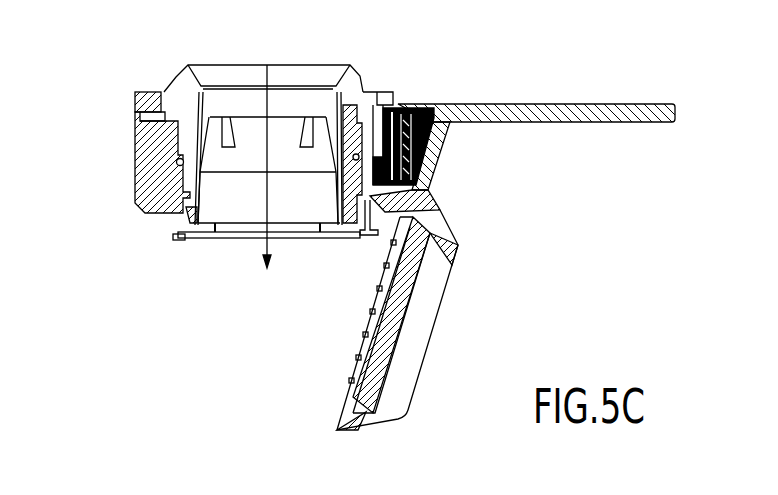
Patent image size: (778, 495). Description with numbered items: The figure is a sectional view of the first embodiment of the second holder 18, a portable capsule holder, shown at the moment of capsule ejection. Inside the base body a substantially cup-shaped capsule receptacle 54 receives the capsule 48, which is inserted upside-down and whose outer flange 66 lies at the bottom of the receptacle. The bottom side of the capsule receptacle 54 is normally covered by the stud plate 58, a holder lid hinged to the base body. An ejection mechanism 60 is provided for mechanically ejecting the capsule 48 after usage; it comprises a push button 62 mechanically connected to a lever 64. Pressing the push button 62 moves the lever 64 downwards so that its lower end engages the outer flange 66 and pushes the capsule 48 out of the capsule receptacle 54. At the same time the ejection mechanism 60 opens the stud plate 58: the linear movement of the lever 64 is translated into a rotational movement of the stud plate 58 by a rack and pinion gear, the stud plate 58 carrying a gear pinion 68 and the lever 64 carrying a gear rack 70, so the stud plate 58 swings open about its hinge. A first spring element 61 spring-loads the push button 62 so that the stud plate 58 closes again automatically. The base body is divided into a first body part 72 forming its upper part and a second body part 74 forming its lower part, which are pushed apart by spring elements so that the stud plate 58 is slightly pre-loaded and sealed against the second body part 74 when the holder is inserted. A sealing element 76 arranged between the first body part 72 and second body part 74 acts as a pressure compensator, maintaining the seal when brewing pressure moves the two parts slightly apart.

The second holder 18 is at (122, 79).
The capsule 48 is at (237, 195).
The capsule receptacle 54 is at (307, 100).
The stud plate 58 is at (458, 250).
The ejection mechanism 60 is at (441, 98).
The first spring element 61 is at (430, 133).
The push button 62 is at (403, 105).
The lever 64 is at (417, 160).
The outer flange 66 is at (178, 240).
The gear pinion 68 is at (403, 200).
The gear rack 70 is at (364, 231).
The first body part 72 is at (147, 98).
The second body part 74 is at (147, 177).
The sealing element 76 is at (178, 160).